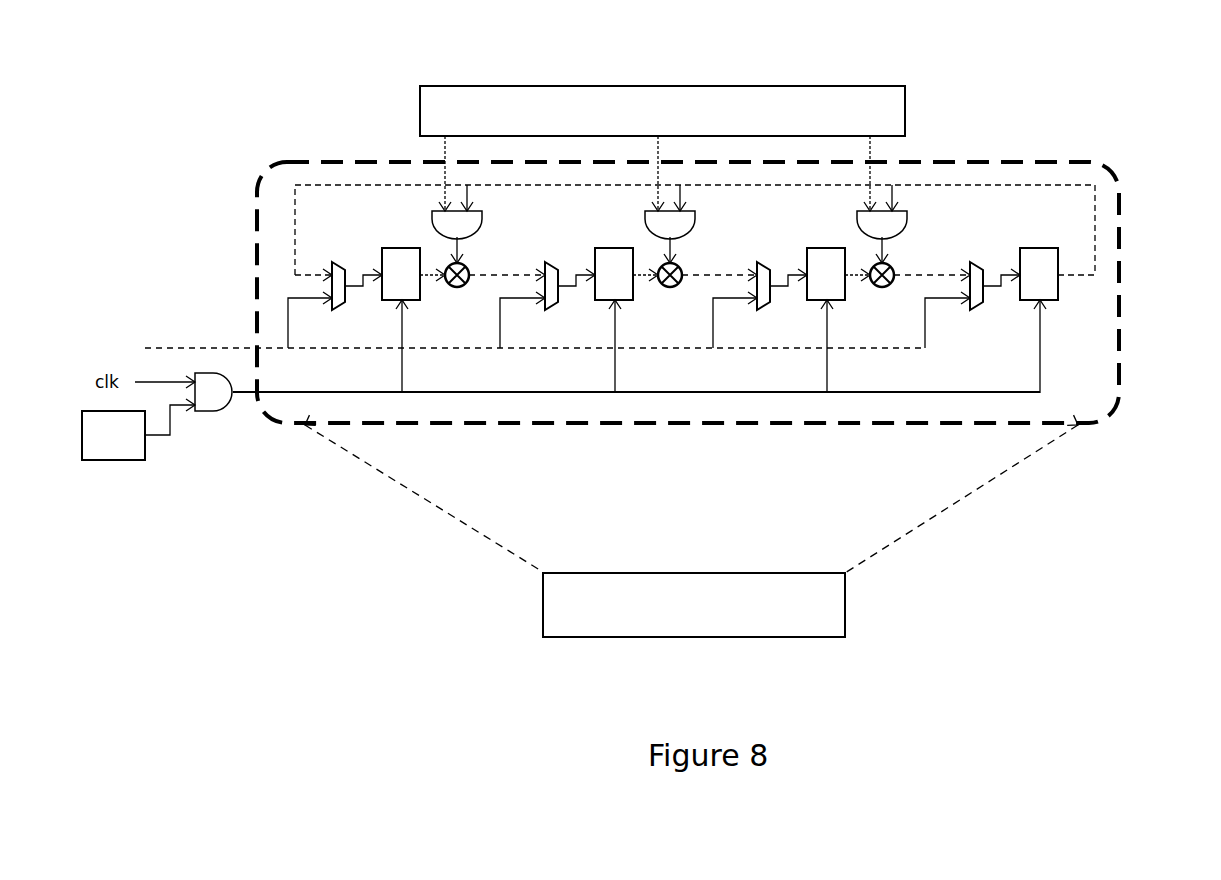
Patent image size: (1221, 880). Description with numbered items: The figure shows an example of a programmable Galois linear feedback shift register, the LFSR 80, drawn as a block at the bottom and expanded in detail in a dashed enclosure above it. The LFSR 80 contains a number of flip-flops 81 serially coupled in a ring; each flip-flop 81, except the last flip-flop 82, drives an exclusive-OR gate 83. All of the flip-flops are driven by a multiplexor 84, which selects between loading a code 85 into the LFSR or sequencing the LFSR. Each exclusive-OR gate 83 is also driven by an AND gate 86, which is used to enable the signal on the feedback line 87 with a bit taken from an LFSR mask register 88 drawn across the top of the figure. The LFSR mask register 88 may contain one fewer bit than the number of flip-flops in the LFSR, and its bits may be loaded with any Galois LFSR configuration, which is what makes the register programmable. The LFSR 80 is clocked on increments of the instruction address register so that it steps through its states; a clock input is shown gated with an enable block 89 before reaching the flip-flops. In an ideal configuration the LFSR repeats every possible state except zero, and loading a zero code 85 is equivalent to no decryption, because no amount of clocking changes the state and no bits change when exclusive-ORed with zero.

The LFSR 80 is at (845, 610).
The flip-flop 81 is at (382, 300).
The last flip-flop 82 is at (1045, 250).
The exclusive-OR gate 83 is at (882, 290).
The multiplexor 84 is at (337, 258).
The code 85 is at (108, 340).
The AND gate 86 is at (905, 222).
The feedback line 87 is at (1098, 230).
The LFSR mask register 88 is at (868, 93).
The enable block 89 is at (125, 462).